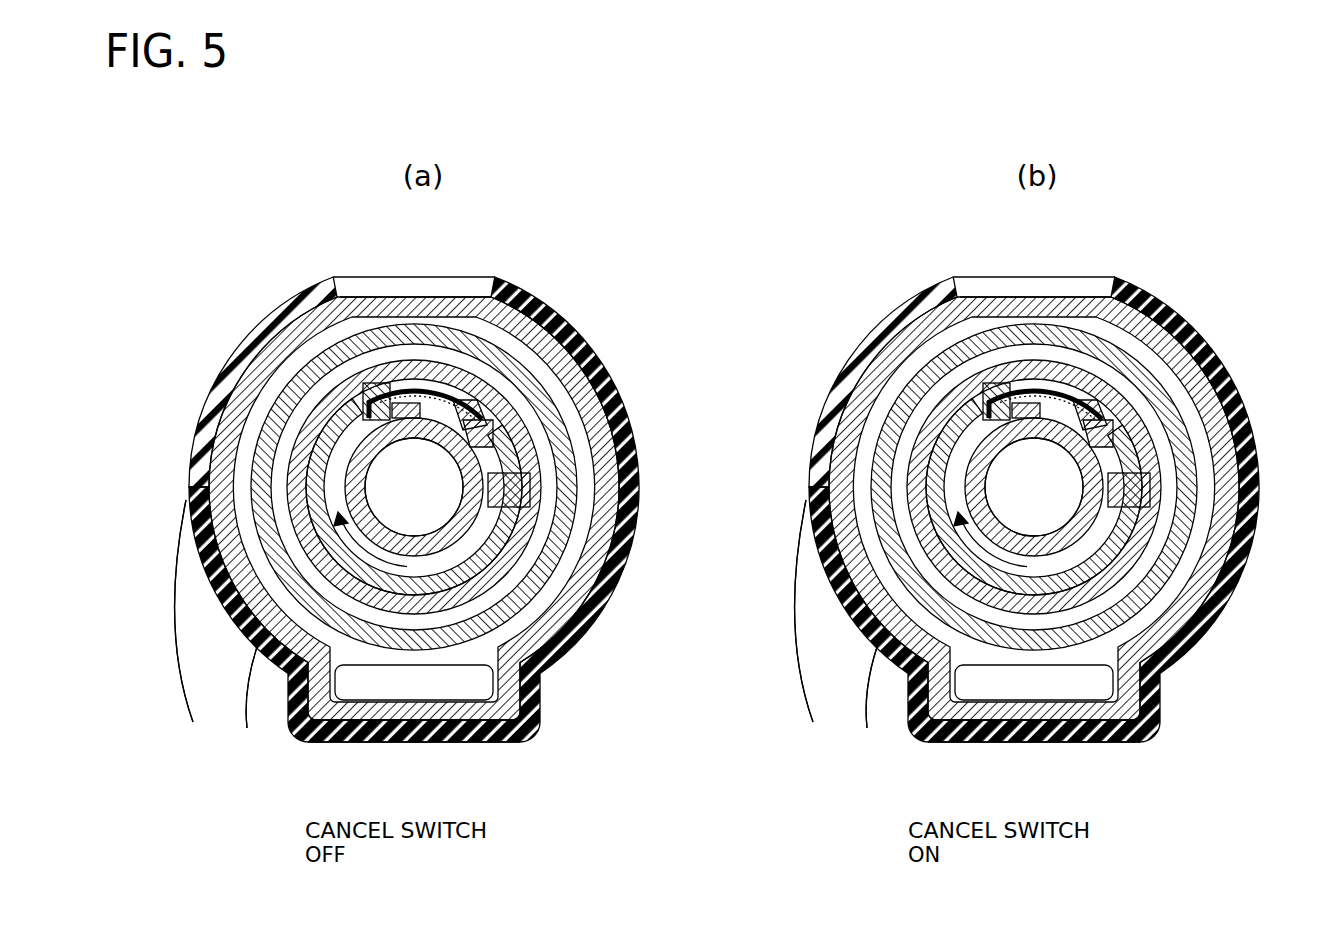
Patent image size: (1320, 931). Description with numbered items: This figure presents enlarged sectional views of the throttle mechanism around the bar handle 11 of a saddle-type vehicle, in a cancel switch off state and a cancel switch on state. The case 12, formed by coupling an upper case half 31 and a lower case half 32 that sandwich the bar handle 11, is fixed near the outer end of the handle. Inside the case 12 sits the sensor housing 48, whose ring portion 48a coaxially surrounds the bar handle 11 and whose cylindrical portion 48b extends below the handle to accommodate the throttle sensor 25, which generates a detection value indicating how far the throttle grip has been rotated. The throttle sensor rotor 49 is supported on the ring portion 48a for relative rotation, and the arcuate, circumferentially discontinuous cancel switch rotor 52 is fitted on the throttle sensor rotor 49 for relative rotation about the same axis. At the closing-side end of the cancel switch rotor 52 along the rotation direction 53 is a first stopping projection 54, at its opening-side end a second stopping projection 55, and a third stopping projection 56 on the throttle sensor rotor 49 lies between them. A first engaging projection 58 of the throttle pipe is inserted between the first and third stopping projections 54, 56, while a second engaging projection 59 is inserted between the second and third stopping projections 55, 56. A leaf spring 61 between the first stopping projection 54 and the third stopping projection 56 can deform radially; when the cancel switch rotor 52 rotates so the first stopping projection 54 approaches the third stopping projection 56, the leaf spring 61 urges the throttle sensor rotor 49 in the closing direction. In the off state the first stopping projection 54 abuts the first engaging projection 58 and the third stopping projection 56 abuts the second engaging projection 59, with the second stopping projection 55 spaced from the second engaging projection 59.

The bar handle 11 is at (387, 532).
The case 12 is at (172, 754).
The throttle sensor 25 is at (434, 742).
The upper case half 31 is at (502, 629).
The lower case half 32 is at (553, 702).
The sensor housing 48 is at (590, 348).
The ring portion 48a is at (415, 300).
The cylindrical portion 48b is at (520, 693).
The throttle sensor rotor 49 is at (598, 403).
The cancel switch rotor 52 is at (532, 590).
The rotation direction 53 is at (420, 655).
The first stopping projection 54 is at (320, 425).
The second stopping projection 55 is at (523, 462).
The third stopping projection 56 is at (452, 447).
The first engaging projection 58 is at (398, 395).
The second engaging projection 59 is at (535, 432).
The leaf spring 61 is at (457, 398).